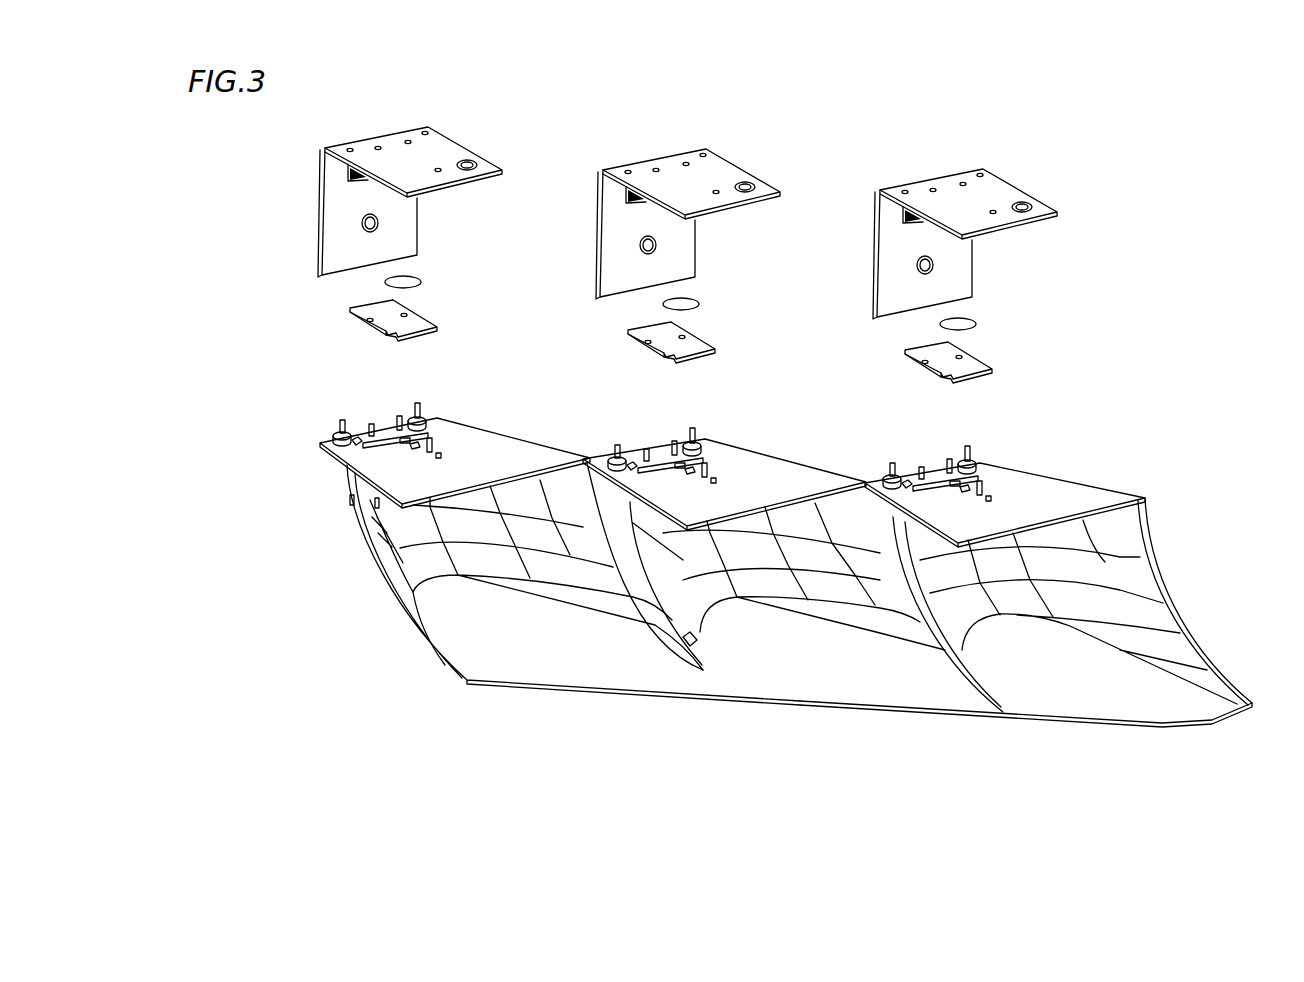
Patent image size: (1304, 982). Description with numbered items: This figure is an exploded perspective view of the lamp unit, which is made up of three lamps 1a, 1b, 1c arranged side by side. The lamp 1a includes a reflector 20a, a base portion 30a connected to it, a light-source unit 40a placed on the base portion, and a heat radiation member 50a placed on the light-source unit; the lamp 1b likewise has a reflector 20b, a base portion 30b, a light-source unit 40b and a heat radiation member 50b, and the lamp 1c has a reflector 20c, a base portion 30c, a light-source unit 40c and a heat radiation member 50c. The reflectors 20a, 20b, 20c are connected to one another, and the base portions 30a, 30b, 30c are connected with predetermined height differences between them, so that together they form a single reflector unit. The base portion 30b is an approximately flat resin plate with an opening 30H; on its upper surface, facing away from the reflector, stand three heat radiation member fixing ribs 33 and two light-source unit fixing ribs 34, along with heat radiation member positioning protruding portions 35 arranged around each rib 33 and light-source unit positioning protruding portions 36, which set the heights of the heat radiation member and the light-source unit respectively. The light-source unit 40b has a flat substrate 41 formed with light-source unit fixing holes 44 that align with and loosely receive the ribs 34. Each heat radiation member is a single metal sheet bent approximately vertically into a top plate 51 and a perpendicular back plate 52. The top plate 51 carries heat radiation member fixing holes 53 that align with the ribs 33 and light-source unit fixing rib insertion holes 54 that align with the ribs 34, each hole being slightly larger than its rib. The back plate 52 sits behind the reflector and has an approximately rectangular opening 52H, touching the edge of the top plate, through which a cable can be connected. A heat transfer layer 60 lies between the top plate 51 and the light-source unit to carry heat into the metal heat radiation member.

The lamp 1a is at (457, 697).
The lamp 1b is at (774, 727).
The lamp 1c is at (1120, 741).
The reflector 20a is at (571, 613).
The reflector 20b is at (773, 612).
The reflector 20c is at (1101, 650).
The base portion 30a is at (523, 450).
The base portion 30b is at (803, 475).
The base portion 30c is at (1093, 492).
The opening 30H is at (405, 431).
The heat radiation member fixing rib 33 is at (338, 432).
The light-source unit fixing rib 34 is at (370, 423).
The heat radiation member positioning protruding portion 35 is at (342, 419).
The light-source unit positioning protruding portion 36 is at (355, 436).
The light-source unit 40a is at (436, 320).
The light-source unit 40b is at (695, 331).
The light-source unit 40c is at (971, 351).
The substrate 41 is at (348, 310).
The light-source unit fixing hole 44 is at (405, 312).
The heat radiation member 50a is at (490, 153).
The heat radiation member 50b is at (790, 154).
The heat radiation member 50c is at (1067, 174).
The top plate 51 is at (466, 152).
The back plate 52 is at (321, 180).
The opening 52H is at (362, 182).
The heat radiation member fixing hole 53 is at (351, 148).
The light-source unit fixing rib insertion hole 54 is at (378, 146).
The heat transfer layer 60 is at (413, 276).